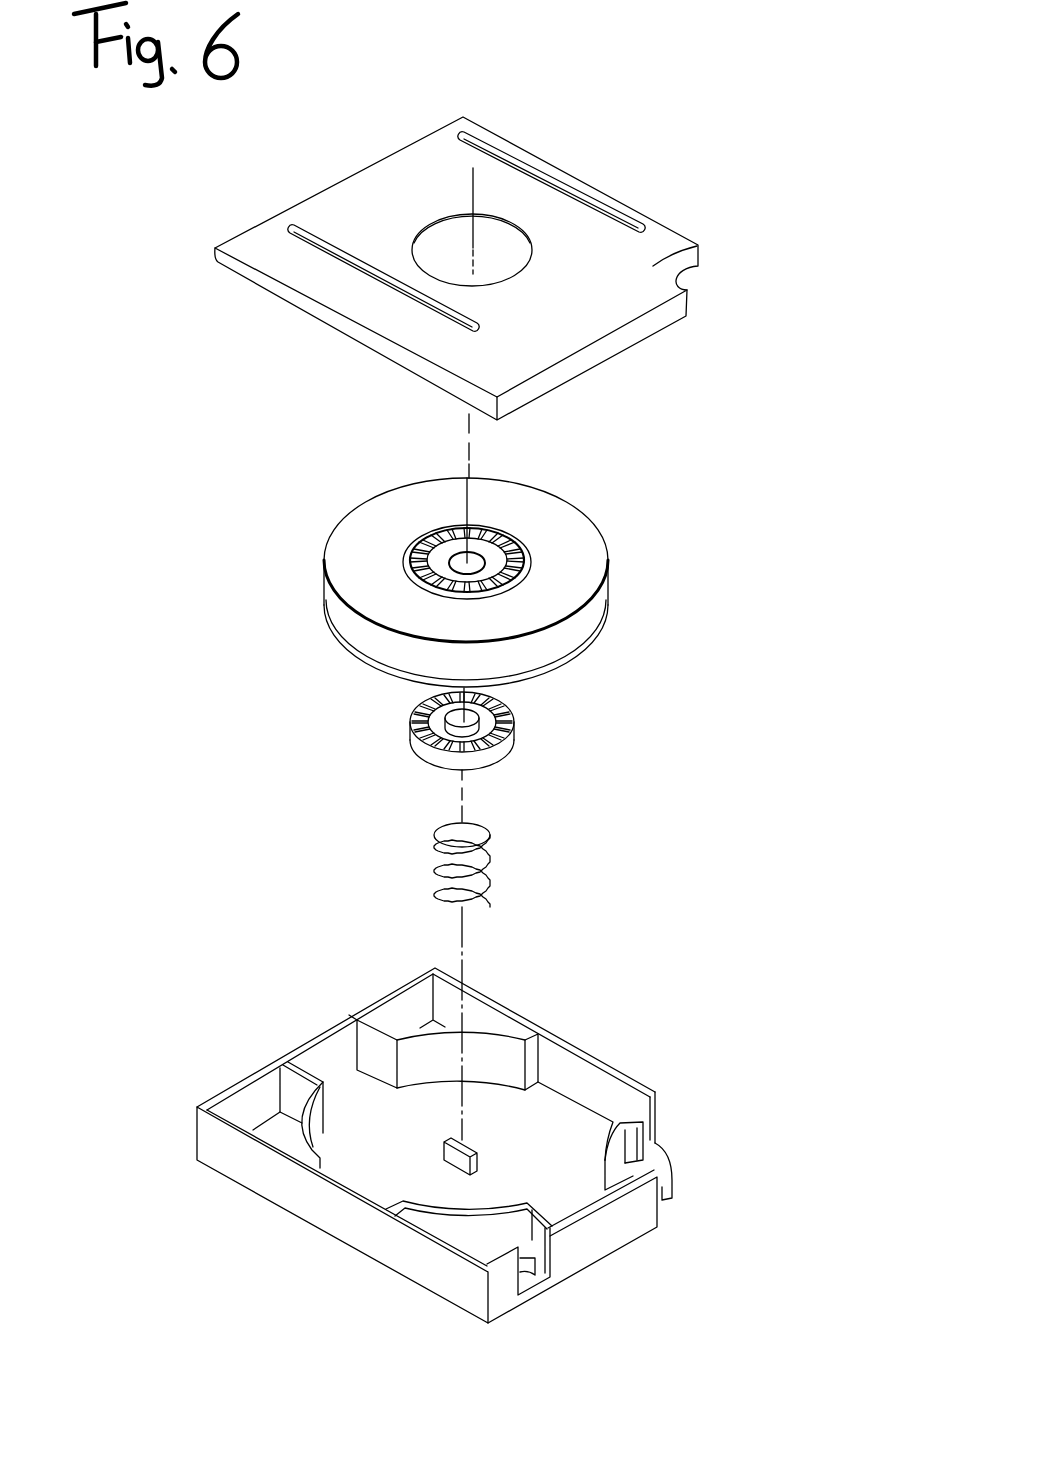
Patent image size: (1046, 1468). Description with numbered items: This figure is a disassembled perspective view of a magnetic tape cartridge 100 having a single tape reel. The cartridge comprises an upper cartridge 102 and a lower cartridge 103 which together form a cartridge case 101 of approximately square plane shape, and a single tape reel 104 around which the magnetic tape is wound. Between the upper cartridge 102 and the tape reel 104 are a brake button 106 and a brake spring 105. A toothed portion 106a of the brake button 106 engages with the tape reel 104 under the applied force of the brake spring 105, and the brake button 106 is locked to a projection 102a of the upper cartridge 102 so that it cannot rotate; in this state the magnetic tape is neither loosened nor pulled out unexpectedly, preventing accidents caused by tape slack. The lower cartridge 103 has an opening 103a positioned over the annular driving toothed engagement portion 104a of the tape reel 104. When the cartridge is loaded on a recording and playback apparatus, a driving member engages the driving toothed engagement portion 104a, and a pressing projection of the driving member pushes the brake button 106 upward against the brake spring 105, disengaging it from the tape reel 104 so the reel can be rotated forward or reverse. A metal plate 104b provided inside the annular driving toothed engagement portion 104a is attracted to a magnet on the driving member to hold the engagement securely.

The magnetic tape cartridge 100 is at (561, 128).
The cartridge case 101 is at (795, 1215).
The upper cartridge 102 is at (637, 1216).
The projection 102a is at (470, 1157).
The lower cartridge 103 is at (698, 246).
The opening 103a is at (516, 250).
The tape reel 104 is at (573, 577).
The driving toothed engagement portion 104a is at (507, 537).
The metal plate 104b is at (438, 565).
The brake spring 105 is at (490, 850).
The brake button 106 is at (500, 750).
The toothed portion 106a is at (508, 706).